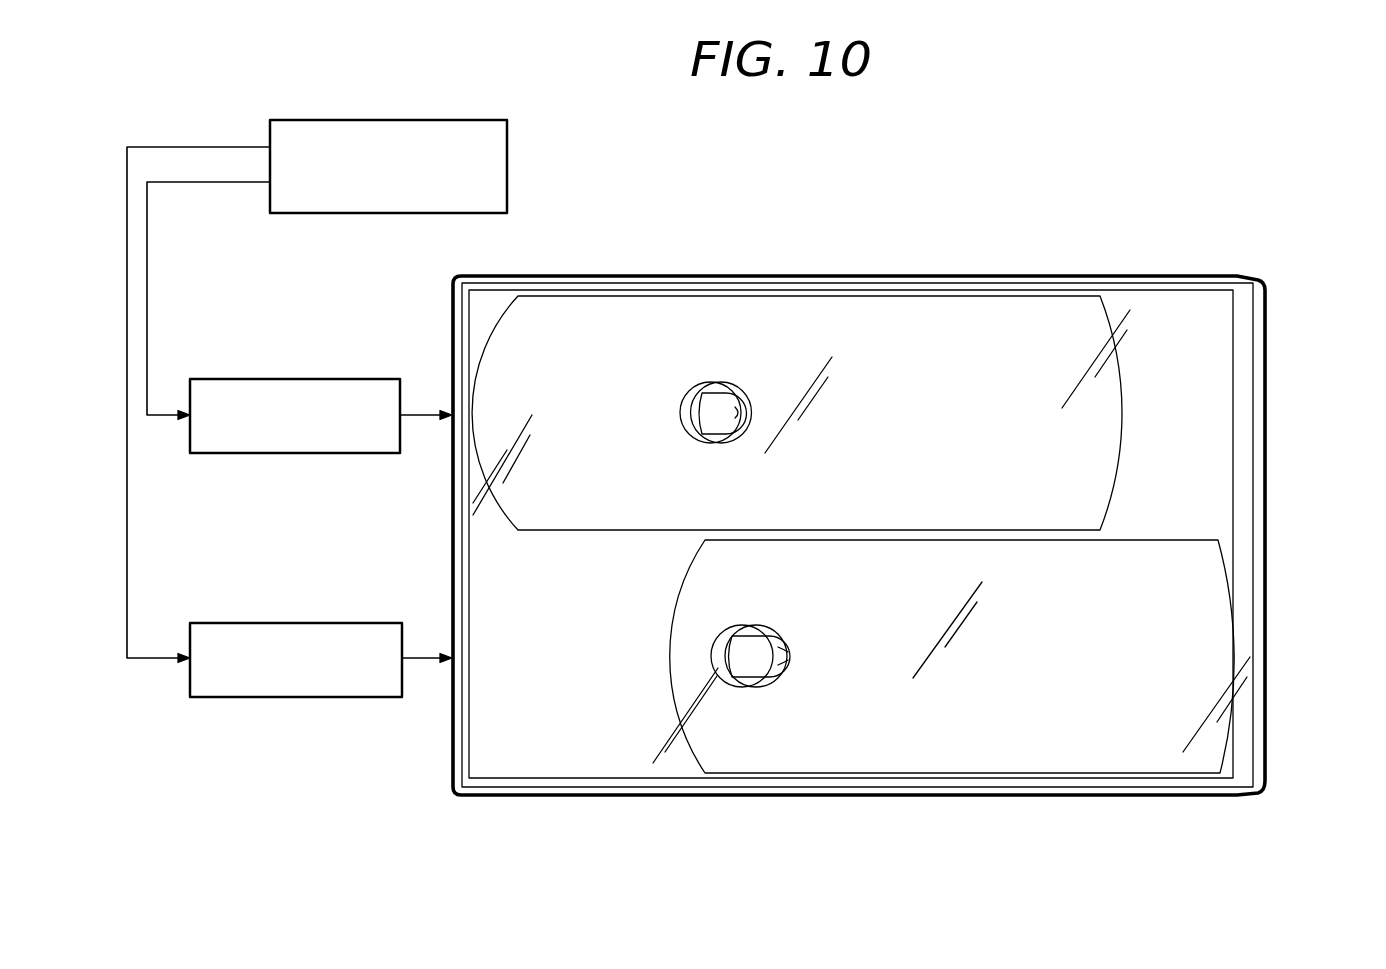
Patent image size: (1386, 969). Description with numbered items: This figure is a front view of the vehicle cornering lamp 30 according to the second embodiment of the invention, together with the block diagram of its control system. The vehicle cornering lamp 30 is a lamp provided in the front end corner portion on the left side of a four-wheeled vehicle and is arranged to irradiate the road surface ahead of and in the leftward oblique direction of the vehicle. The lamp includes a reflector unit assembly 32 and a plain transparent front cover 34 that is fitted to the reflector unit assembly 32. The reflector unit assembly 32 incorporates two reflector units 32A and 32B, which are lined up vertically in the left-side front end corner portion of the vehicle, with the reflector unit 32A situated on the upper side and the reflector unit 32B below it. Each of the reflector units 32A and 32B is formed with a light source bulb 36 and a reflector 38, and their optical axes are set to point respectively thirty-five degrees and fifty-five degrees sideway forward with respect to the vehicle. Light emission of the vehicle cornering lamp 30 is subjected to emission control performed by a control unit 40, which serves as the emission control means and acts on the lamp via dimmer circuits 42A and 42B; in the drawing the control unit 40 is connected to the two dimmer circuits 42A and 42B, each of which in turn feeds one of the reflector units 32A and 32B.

The vehicle cornering lamp 30 is at (1148, 187).
The reflector unit assembly 32 is at (737, 275).
The reflector unit 32A is at (517, 338).
The reflector unit 32B is at (1195, 615).
The plain transparent front cover 34 is at (1270, 386).
The light source bulb 36 is at (728, 425).
The reflector 38 is at (943, 333).
The control unit 40 is at (508, 140).
The dimmer circuit 42A is at (275, 378).
The dimmer circuit 42B is at (275, 622).